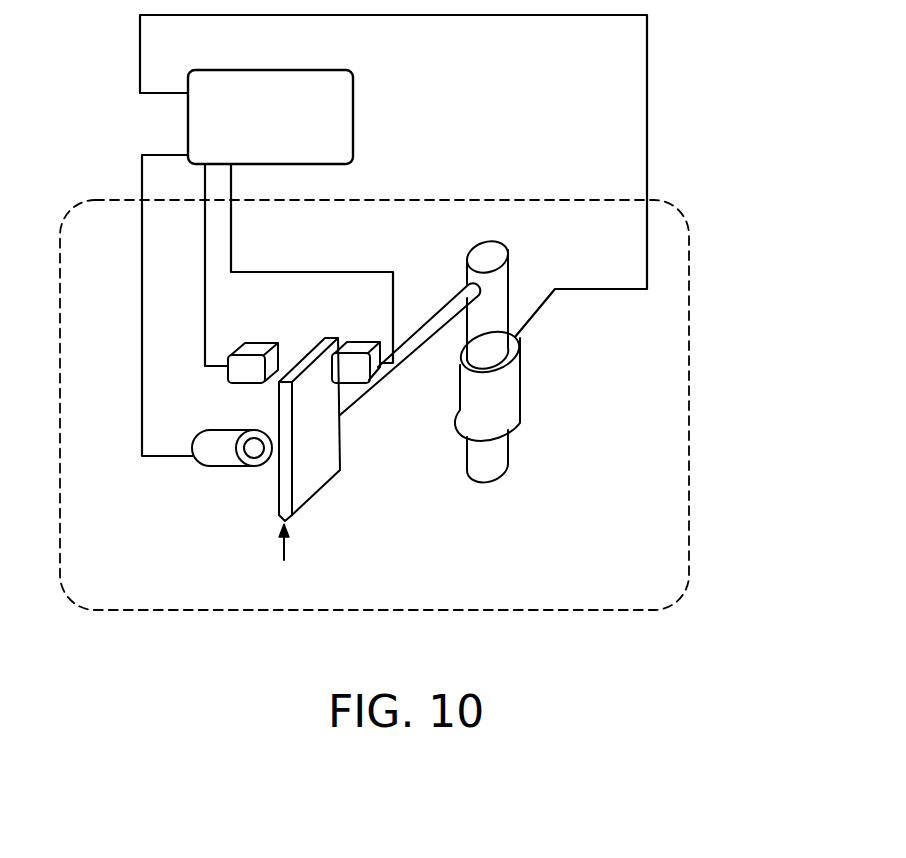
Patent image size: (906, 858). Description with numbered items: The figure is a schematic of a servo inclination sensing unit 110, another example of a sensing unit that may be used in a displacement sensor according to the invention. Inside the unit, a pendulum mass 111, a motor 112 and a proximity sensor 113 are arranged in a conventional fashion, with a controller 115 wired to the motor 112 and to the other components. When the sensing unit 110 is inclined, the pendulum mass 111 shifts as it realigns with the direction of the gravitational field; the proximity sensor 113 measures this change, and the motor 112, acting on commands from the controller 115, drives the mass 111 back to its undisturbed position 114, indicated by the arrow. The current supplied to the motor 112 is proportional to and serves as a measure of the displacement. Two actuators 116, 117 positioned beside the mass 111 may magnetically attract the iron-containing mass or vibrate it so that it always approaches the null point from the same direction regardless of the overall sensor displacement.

The servo inclination sensing unit 110 is at (688, 317).
The pendulum mass 111 is at (323, 448).
The motor 112 is at (510, 402).
The proximity sensor 113 is at (217, 453).
The undisturbed position 114 is at (292, 548).
The controller 115 is at (337, 108).
The actuator 116 is at (252, 347).
The actuator 117 is at (360, 348).